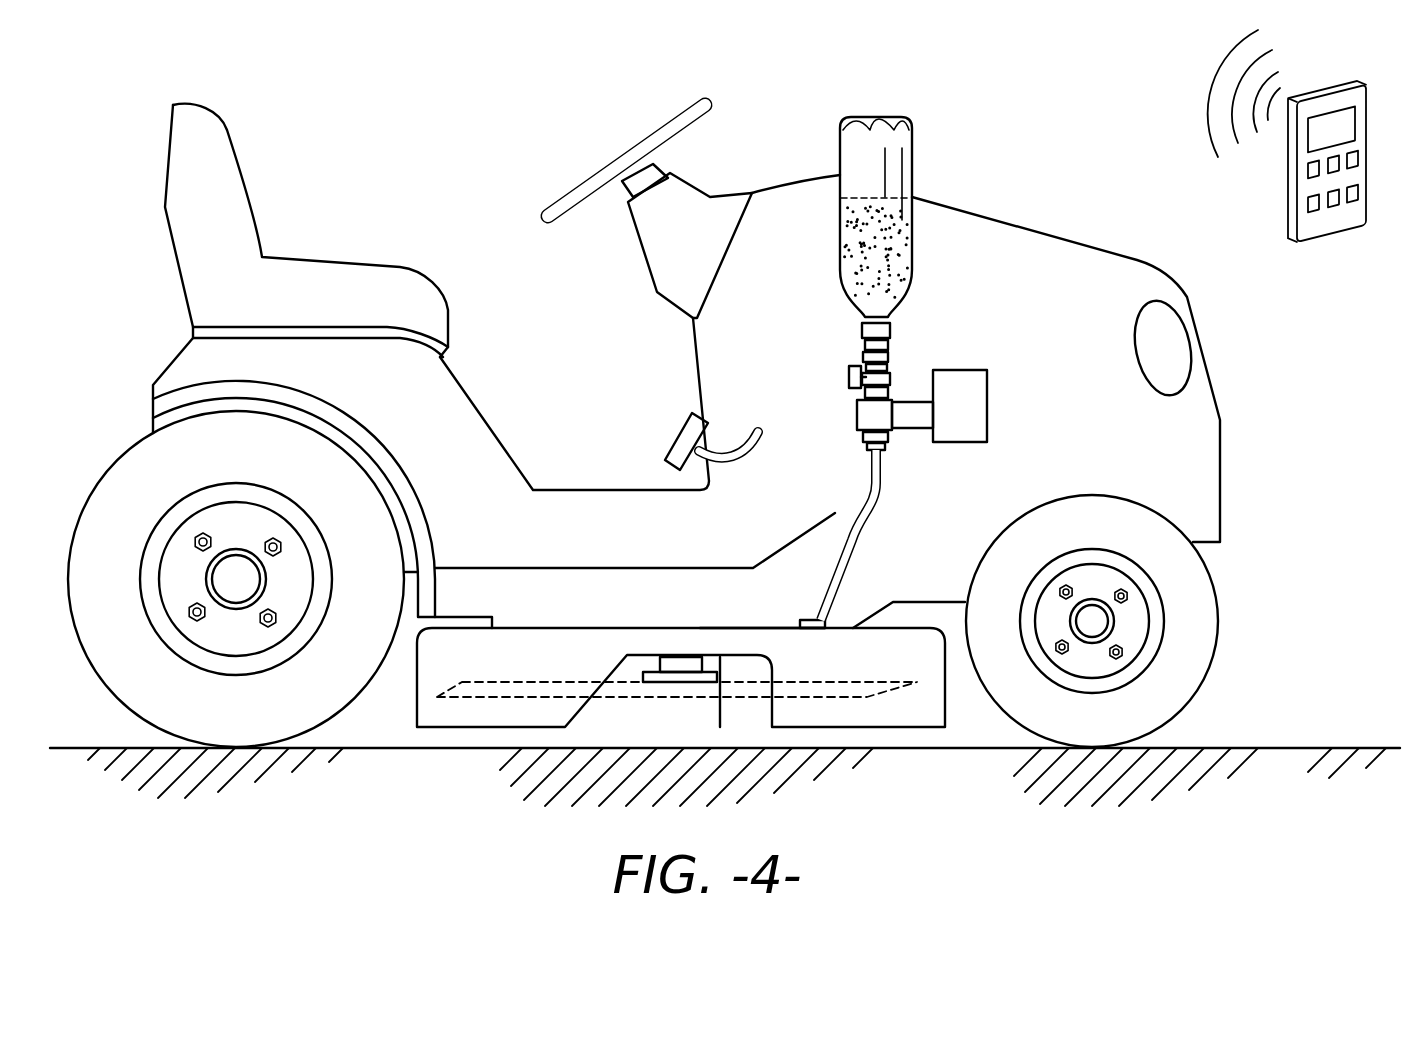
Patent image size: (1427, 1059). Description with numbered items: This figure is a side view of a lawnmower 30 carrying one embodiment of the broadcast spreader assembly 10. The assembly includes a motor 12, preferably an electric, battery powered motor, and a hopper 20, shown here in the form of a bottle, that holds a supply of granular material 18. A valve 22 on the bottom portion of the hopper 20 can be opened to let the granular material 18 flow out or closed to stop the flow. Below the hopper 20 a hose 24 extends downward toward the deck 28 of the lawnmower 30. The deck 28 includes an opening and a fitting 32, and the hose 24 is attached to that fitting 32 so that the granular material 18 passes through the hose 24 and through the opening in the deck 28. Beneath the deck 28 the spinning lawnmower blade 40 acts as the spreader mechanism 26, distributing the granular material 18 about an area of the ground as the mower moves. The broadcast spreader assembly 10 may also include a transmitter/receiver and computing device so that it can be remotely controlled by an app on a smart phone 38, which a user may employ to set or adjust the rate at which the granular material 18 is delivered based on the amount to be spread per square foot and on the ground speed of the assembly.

The broadcast spreader assembly 10 is at (917, 337).
The motor 12 is at (988, 395).
The granular material 18 is at (878, 232).
The hopper 20 is at (912, 138).
The valve 22 is at (848, 373).
The hose 24 is at (866, 515).
The spreader mechanism 26 is at (880, 653).
The deck 28 is at (755, 627).
The lawnmower 30 is at (803, 200).
The fitting 32 is at (830, 620).
The smart phone 38 is at (1372, 118).
The lawnmower blade 40 is at (868, 698).